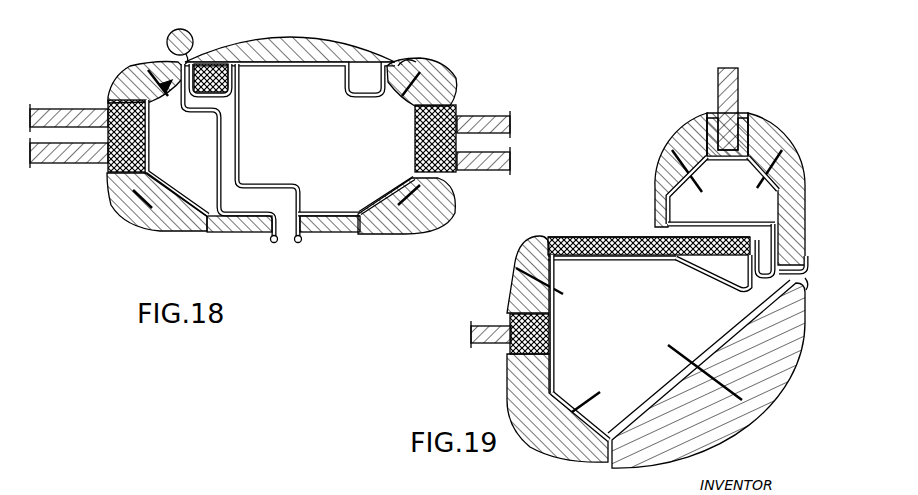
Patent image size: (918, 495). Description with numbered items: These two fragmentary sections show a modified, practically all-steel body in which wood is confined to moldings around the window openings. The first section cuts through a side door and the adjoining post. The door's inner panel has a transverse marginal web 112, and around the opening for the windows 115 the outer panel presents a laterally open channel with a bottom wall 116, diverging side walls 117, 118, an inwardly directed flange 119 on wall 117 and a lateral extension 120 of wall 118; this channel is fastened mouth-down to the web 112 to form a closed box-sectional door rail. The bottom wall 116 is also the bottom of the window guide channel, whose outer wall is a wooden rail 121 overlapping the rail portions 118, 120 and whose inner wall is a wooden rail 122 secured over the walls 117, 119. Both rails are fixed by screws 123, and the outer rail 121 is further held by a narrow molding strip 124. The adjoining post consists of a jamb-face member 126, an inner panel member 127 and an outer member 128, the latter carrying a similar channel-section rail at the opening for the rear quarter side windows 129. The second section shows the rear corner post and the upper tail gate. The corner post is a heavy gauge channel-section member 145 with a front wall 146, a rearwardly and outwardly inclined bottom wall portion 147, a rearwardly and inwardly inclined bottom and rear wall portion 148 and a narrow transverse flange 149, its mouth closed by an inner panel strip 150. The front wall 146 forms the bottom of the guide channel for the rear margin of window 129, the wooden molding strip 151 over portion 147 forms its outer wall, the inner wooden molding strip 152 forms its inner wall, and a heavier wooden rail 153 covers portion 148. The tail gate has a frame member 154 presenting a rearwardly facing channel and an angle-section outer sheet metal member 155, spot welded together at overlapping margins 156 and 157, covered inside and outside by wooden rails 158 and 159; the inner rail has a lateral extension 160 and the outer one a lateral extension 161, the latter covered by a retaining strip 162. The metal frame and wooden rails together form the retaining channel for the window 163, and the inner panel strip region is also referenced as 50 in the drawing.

In FIG. 19, the channel 50 is at (576, 237).
In FIG. 18, the transverse marginal web 112 is at (218, 164).
In FIG. 18, the windows 115 is at (62, 118).
In FIG. 18, the bottom wall 116 is at (148, 143).
In FIG. 18, the side wall 117 is at (180, 98).
In FIG. 18, the side wall 118 is at (168, 196).
In FIG. 18, the inwardly directed flange 119 is at (174, 56).
In FIG. 18, the lateral extension 120 is at (229, 230).
In FIG. 18, the wooden rails 121 is at (150, 225).
In FIG. 18, the wooden rails 122 is at (120, 84).
In FIG. 18, the screws 123 is at (148, 68).
In FIG. 18, the molding strips 124 is at (278, 240).
In FIG. 18, the jamb-face member 126 is at (240, 159).
In FIG. 18, the inner panel member 127 is at (300, 66).
In FIG. 18, the outer member 128 is at (386, 200).
In FIG. 18, the rear quarter side windows 129 is at (497, 156).
In FIG. 19, the rear quarter side windows 129 is at (494, 326).
In FIG. 19, the channel-section member 145 is at (557, 354).
In FIG. 19, the front wall 146 is at (556, 328).
In FIG. 19, the bottom wall portion 147 is at (590, 422).
In FIG. 19, the bottom and rear wall portion 148 is at (664, 370).
In FIG. 19, the transverse flange 149 is at (735, 286).
In FIG. 19, the inner panel strip 150 is at (634, 259).
In FIG. 19, the wooden molding strip 151 is at (510, 380).
In FIG. 19, the inner wooden molding strip 152 is at (524, 246).
In FIG. 19, the wooden rail 153 is at (735, 436).
In FIG. 19, the frame member 154 is at (708, 223).
In FIG. 19, the outer sheet metal member 155 is at (779, 200).
In FIG. 19, the overlapping marginal portion 156 is at (746, 160).
In FIG. 19, the overlapping marginal portion 157 is at (776, 232).
In FIG. 19, the inner wooden rail 158 is at (688, 132).
In FIG. 19, the outer wooden member 159 is at (774, 130).
In FIG. 19, the lateral extension 160 is at (660, 209).
In FIG. 19, the lateral extension 161 is at (805, 168).
In FIG. 19, the retaining strip 162 is at (806, 292).
In FIG. 19, the window 163 is at (738, 80).